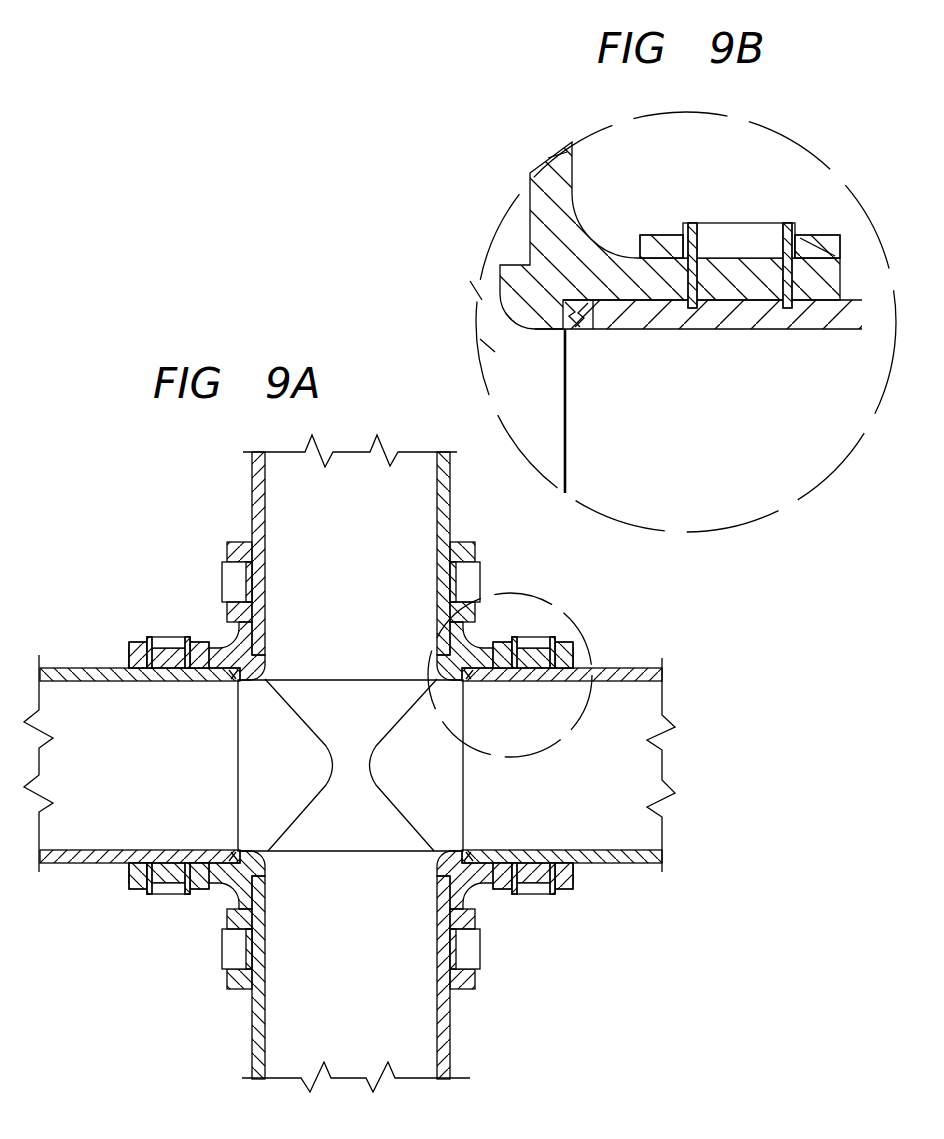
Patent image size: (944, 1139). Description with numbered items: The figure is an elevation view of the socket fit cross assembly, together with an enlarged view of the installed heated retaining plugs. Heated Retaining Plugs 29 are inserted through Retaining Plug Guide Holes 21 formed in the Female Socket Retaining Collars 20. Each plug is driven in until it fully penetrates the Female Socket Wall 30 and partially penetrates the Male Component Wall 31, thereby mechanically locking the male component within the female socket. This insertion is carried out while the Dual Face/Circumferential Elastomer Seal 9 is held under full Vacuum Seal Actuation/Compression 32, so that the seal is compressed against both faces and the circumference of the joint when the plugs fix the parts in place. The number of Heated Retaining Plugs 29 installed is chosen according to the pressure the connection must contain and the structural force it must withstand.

The Dual Face/Circumferential Elastomer Seal 9 is at (603, 330).
The Female Socket Retaining Collar 20 is at (657, 246).
The Retaining Plug Guide Hole 21 is at (637, 258).
The Heated Retaining Plug 29 is at (692, 226).
The Female Socket Wall 30 is at (813, 265).
The Male Component Wall 31 is at (768, 322).
The Vacuum Seal Actuation/Compression 32 is at (577, 312).